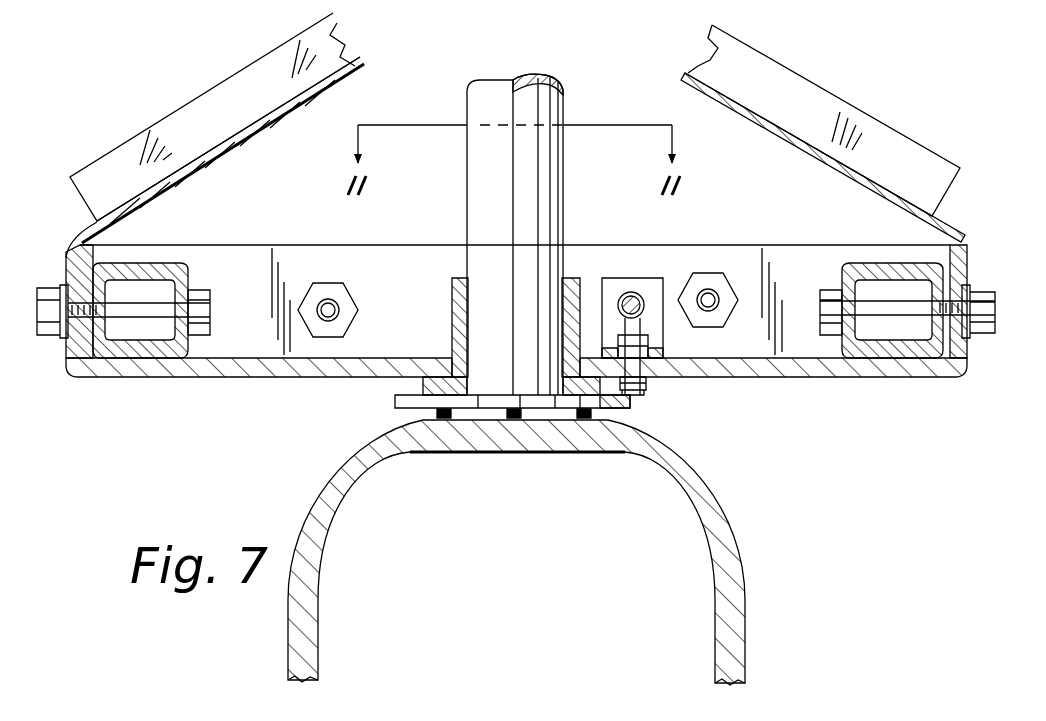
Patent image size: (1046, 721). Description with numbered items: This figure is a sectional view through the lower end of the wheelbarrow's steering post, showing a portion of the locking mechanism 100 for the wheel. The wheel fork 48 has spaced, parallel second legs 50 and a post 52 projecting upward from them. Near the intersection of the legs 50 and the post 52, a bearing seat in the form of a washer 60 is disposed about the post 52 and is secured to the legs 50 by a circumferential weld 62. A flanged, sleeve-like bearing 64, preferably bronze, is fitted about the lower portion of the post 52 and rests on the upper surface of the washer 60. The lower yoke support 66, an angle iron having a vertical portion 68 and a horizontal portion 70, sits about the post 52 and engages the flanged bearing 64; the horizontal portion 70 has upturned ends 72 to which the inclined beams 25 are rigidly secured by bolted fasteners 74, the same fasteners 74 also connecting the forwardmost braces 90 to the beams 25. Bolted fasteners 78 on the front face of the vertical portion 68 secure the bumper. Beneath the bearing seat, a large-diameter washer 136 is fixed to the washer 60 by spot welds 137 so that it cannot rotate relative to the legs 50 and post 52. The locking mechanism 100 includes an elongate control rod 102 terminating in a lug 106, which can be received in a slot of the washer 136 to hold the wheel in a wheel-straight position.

The beams 25 is at (150, 262).
The wheel fork 48 is at (491, 545).
The second legs 50 is at (307, 658).
The post 52 is at (548, 185).
The washer 60 is at (500, 415).
The circumferential weld 62 is at (420, 426).
The flanged sleeve-like bearing 64 is at (462, 318).
The lower yoke support 66 is at (820, 378).
The vertical portion 68 is at (738, 262).
The horizontal portion 70 is at (523, 317).
The upturned ends 72 is at (958, 235).
The bolted fasteners 74 is at (200, 313).
The bolted fasteners 78 is at (330, 298).
The braces 90 is at (245, 78).
The locking mechanism 100 is at (656, 396).
The control rod 102 is at (632, 293).
The lug 106 is at (622, 415).
The large-diameter washer 136 is at (478, 410).
The spot welds 137 is at (445, 422).